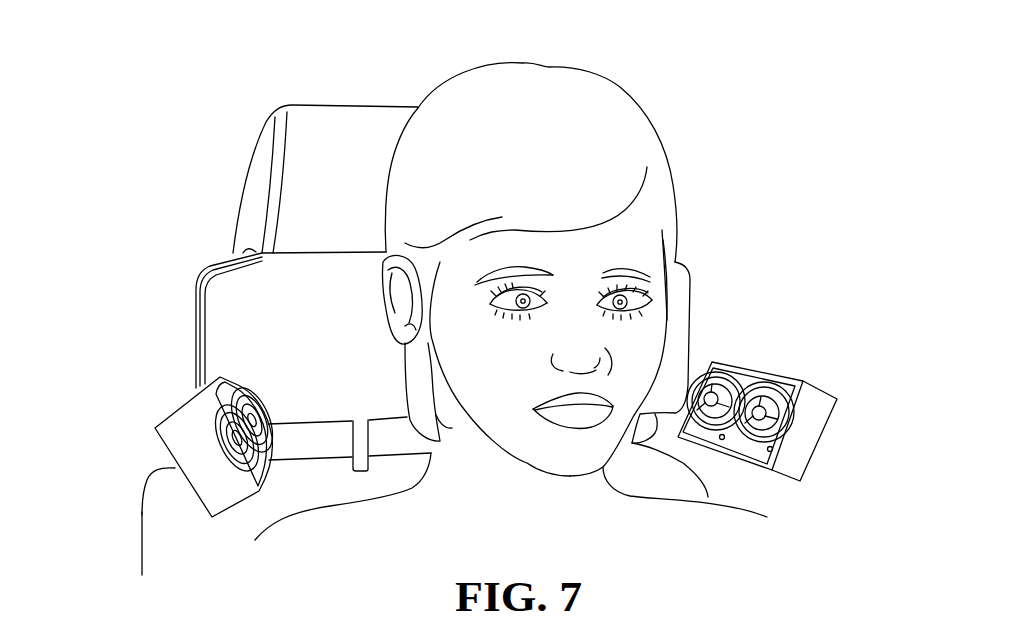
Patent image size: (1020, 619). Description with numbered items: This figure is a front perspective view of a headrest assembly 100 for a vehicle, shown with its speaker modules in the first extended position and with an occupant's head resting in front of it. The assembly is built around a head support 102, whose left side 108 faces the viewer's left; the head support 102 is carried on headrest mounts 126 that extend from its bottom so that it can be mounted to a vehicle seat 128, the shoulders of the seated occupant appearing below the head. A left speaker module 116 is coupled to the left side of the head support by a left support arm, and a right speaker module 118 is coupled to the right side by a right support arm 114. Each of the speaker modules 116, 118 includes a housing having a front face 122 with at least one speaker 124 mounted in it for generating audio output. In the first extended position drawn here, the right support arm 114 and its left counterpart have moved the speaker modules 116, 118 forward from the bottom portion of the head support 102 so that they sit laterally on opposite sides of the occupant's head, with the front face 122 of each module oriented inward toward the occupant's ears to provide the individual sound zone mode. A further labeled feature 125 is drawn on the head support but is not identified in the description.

The headrest assembly 100 is at (328, 55).
The head support 102 is at (232, 207).
The left side 108 is at (262, 160).
The headrest body 125 is at (255, 313).
The headrest mounts 126 is at (368, 445).
The left speaker module 116 is at (168, 451).
The right speaker module 118 is at (813, 440).
The right support arm 114 is at (688, 390).
The front face 122 is at (748, 374).
The speaker 124 is at (797, 383).
The vehicle seat 128 is at (142, 515).